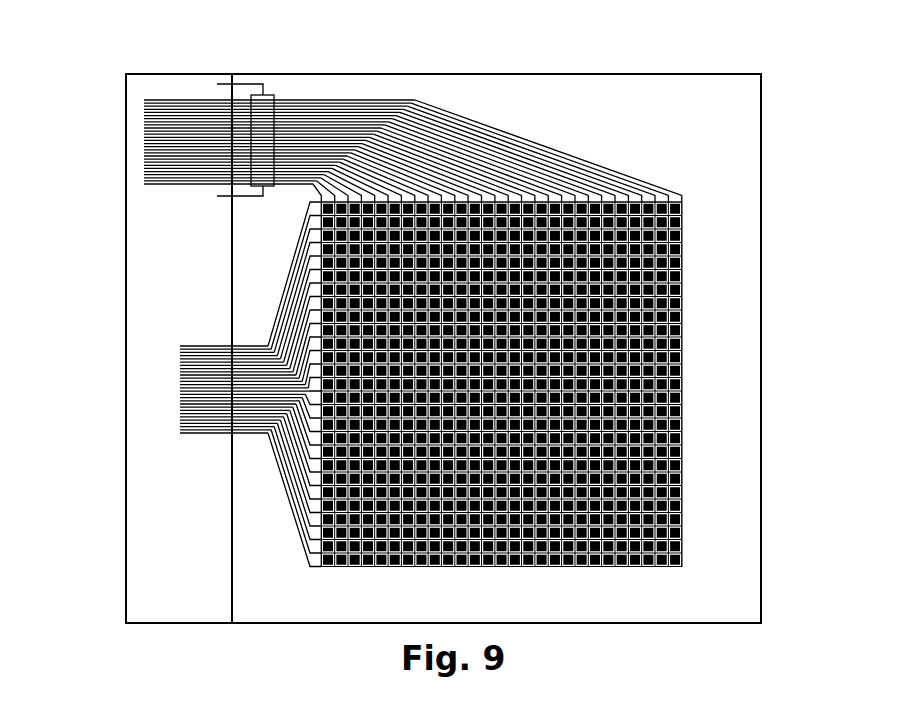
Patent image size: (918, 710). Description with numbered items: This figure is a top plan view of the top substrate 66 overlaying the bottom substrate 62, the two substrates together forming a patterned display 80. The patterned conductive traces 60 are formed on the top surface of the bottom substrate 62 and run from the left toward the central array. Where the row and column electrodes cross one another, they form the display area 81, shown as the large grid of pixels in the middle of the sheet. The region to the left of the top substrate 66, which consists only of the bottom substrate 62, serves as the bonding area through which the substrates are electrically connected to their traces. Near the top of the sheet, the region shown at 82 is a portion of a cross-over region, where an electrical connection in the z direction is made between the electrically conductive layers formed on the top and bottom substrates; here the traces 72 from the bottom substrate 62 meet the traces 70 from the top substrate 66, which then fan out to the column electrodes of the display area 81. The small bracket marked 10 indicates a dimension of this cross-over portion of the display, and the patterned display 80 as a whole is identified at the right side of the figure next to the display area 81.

The pitch / spacing markers 10 is at (220, 141).
The patterned conductive traces 60 is at (154, 406).
The bottom substrate 62 is at (163, 520).
The top substrate 66 is at (730, 413).
The traces from the top substrate 70 is at (357, 78).
The traces from the bottom substrate 72 is at (122, 152).
The patterned display 80 is at (797, 323).
The display area 81 is at (700, 259).
The cross-over region 82 is at (265, 87).